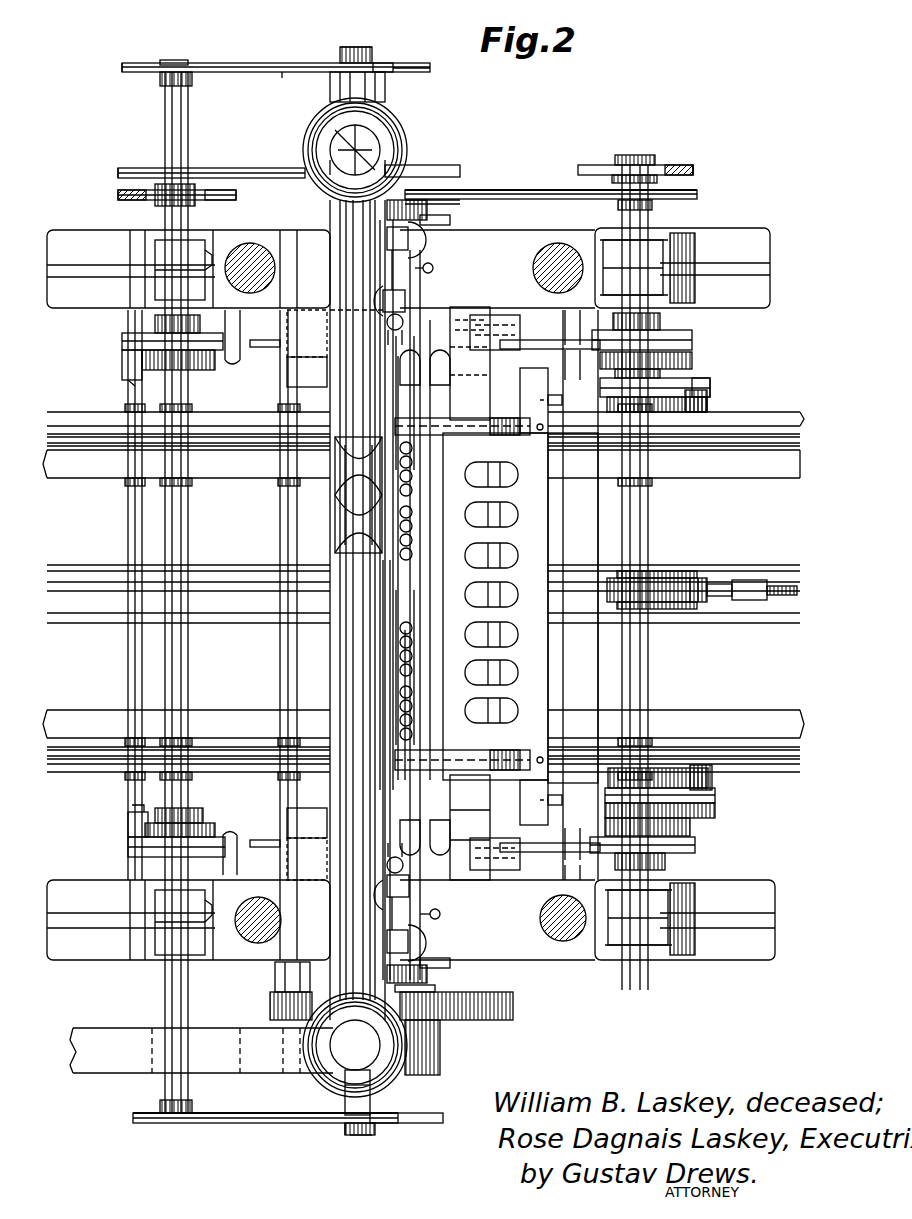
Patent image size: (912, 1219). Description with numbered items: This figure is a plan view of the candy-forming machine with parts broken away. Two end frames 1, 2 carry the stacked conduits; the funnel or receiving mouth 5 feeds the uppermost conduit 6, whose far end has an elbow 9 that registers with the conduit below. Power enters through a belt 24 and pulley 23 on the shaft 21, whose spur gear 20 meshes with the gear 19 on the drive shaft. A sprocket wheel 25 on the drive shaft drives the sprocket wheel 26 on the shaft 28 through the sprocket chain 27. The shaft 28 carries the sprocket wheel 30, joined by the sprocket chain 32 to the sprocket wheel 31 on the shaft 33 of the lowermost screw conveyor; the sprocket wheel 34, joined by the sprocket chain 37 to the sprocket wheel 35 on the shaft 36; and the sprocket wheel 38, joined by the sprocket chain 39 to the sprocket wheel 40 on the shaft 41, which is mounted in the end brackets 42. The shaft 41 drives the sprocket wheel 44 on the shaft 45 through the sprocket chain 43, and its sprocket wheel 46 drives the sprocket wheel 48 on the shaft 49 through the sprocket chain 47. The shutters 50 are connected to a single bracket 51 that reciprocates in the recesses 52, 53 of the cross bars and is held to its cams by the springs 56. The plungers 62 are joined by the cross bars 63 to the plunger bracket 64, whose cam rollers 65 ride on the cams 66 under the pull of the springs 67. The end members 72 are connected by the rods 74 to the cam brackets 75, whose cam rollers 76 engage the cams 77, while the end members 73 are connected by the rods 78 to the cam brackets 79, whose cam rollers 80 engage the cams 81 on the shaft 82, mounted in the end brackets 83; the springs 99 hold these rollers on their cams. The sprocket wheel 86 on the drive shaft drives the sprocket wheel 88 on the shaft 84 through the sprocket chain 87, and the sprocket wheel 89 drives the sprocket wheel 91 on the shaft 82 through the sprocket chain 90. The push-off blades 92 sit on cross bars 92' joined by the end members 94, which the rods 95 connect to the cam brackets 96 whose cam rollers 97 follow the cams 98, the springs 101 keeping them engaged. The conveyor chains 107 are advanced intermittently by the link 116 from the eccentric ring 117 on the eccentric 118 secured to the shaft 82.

The end frame 1 is at (530, 960).
The end frame 2 is at (515, 240).
The funnel or receiving mouth 5 is at (318, 120).
The conduit 6 is at (382, 95).
The elbow 9 is at (380, 1050).
The gear 19 is at (513, 1003).
The spur gear 20 is at (270, 1003).
The shaft 21 is at (298, 1073).
The pulley 23 is at (425, 1075).
The belt 24 is at (86, 1035).
The sprocket wheel 25 is at (440, 168).
The sprocket wheel 26 is at (118, 173).
The sprocket chain 27 is at (250, 162).
The shaft 28 is at (165, 128).
The sprocket wheel 30 is at (152, 1123).
The sprocket wheel 31 is at (443, 1117).
The sprocket chain 32 is at (245, 1113).
The shaft 33 is at (362, 1135).
The sprocket wheel 34 is at (130, 78).
The sprocket wheel 35 is at (395, 70).
The shaft 36 is at (345, 48).
The sprocket chain 37 is at (282, 76).
The sprocket wheel 38 is at (120, 208).
The sprocket chain 39 is at (120, 190).
The sprocket wheel 40 is at (210, 200).
The shaft 41 is at (165, 112).
The end brackets 42 is at (172, 280).
The sprocket chain 43 is at (252, 1123).
The sprocket wheel 44 is at (380, 1123).
The shaft 45 is at (350, 1133).
The sprocket wheel 46 is at (124, 74).
The sprocket chain 47 is at (255, 58).
The sprocket wheel 48 is at (378, 63).
The shaft 49 is at (358, 48).
The shutters 50 is at (385, 700).
The bracket 51 is at (370, 726).
The recesses 52 is at (398, 290).
The recesses 53 is at (420, 895).
The springs 56 is at (400, 322).
The plungers 62 is at (415, 715).
The cross bars 63 is at (432, 600).
The plunger bracket 64 is at (400, 240).
The cam rollers 65 is at (430, 212).
The cams 66 is at (427, 222).
The springs 67 is at (433, 268).
The end members 72 is at (306, 385).
The end members 73 is at (445, 593).
The rods 74 is at (258, 345).
The cam brackets 75 is at (122, 342).
The cam rollers 76 is at (125, 365).
The cams 77 is at (148, 370).
The rods 78 is at (535, 345).
The cam brackets 79 is at (692, 338).
The cam rollers 80 is at (692, 360).
The cams 81 is at (680, 382).
The shaft 82 is at (622, 208).
The end brackets 83 is at (640, 252).
The shaft 84 is at (650, 212).
The sprocket wheel 86 is at (445, 190).
The sprocket chain 87 is at (520, 180).
The sprocket wheel 88 is at (697, 195).
The sprocket wheel 89 is at (676, 165).
The sprocket chain 90 is at (695, 170).
The sprocket wheel 91 is at (578, 166).
The push-off blades 92 is at (491, 606).
The cross bars 92' is at (623, 595).
The end members 94 is at (530, 372).
The rods 95 is at (552, 390).
The cam brackets 96 is at (710, 388).
The cam rollers 97 is at (705, 400).
The cams 98 is at (680, 410).
The springs 99 is at (385, 360).
The springs 101 is at (510, 430).
The conveyor chains 107 is at (735, 440).
The link 116 is at (785, 580).
The eccentric ring 117 is at (695, 605).
The eccentric 118 is at (685, 605).